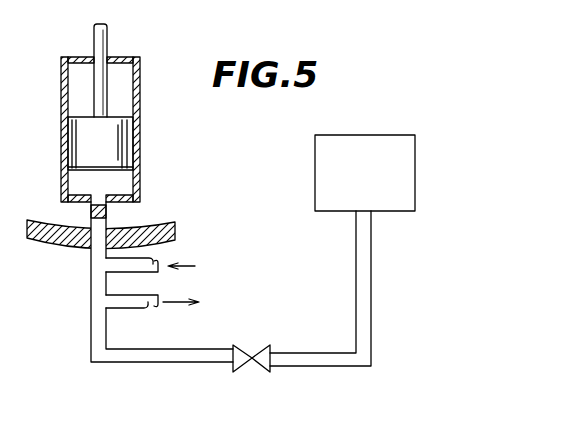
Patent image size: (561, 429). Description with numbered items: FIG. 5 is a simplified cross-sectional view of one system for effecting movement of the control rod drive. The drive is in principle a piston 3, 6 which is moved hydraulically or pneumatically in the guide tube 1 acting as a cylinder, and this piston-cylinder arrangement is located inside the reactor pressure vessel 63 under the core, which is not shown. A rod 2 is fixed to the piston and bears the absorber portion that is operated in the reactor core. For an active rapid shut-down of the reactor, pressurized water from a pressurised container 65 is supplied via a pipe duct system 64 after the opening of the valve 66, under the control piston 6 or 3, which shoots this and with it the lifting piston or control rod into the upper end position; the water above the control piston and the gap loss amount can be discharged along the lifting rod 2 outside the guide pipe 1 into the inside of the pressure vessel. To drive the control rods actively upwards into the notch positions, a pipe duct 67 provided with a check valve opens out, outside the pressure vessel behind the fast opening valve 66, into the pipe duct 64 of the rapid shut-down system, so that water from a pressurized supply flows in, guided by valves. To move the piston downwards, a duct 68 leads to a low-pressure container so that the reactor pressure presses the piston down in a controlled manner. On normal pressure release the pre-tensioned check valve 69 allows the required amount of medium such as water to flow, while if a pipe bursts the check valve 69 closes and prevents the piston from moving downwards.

The guide tube 1 is at (140, 95).
The rod 2 is at (107, 42).
The piston 3 is at (131, 143).
The control piston 6 is at (127, 150).
The reactor pressure vessel 63 is at (150, 228).
The pipe duct system 64 is at (186, 353).
The pressurised container 65 is at (353, 142).
The valve 66 is at (260, 352).
The pipe duct 67 is at (150, 263).
The duct 68 is at (145, 306).
The check valve 69 is at (90, 212).